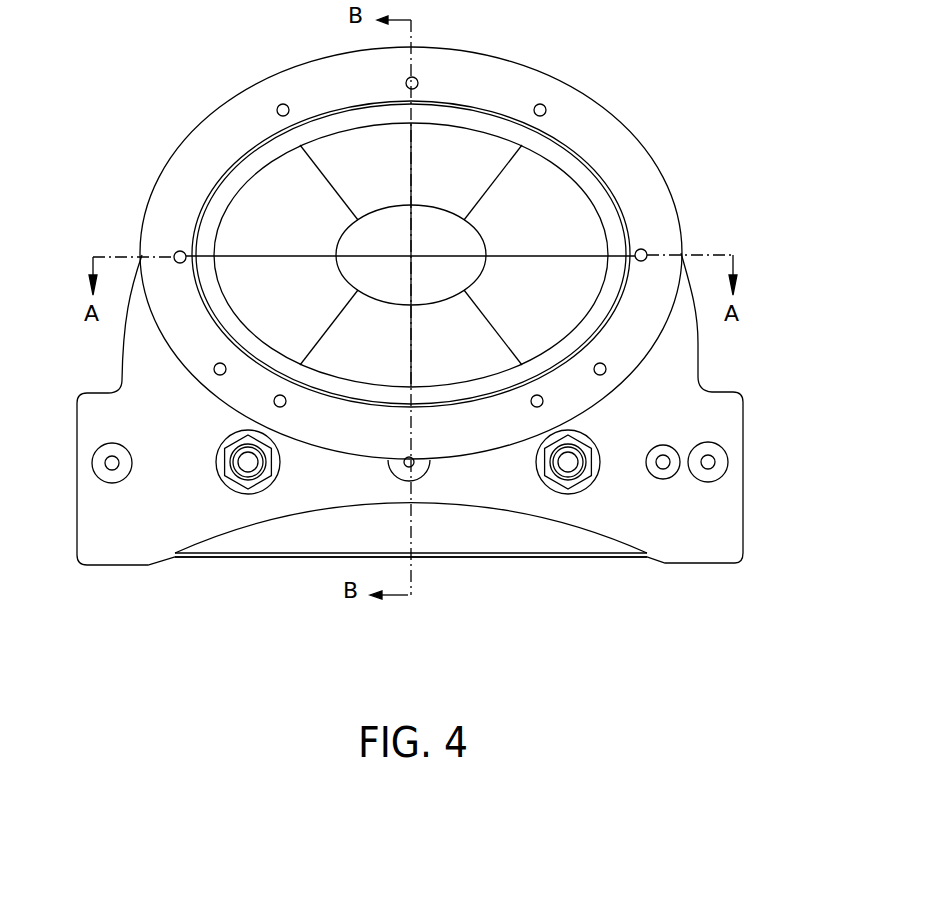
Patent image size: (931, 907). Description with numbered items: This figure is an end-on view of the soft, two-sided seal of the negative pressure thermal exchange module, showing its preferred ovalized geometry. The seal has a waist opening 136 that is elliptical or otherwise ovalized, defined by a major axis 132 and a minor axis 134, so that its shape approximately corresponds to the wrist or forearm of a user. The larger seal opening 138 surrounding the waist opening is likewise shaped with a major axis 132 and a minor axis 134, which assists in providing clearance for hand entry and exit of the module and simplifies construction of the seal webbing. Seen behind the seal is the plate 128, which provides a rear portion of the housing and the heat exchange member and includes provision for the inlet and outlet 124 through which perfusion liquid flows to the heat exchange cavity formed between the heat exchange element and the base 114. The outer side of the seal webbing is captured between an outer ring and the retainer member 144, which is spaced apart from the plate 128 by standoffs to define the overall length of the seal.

The base 114 is at (480, 557).
The inlet and outlet 124 is at (248, 490).
The plate 128 is at (735, 424).
The major axis 132 is at (608, 252).
The minor axis 134 is at (412, 160).
The waist opening 136 is at (487, 238).
The seal opening 138 is at (605, 213).
The retainer member 144 is at (563, 107).